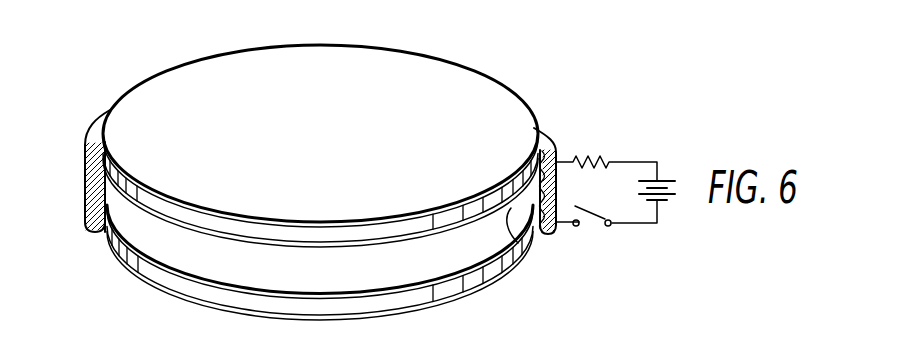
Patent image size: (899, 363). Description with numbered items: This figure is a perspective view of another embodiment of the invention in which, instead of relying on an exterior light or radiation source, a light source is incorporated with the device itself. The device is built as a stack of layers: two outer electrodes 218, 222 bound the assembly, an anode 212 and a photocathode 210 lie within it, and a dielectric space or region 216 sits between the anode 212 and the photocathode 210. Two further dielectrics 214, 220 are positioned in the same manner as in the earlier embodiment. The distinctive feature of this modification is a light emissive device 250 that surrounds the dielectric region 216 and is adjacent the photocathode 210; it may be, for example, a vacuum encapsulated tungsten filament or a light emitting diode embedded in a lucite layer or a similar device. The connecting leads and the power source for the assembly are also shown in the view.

The photocathode 210 is at (212, 286).
The anode 212 is at (416, 236).
The dielectric 214 is at (258, 303).
The dielectric space 216 is at (534, 242).
The outer electrode 218 is at (382, 316).
The dielectric 220 is at (452, 216).
The outer electrode 222 is at (490, 94).
The light emissive device 250 is at (85, 186).